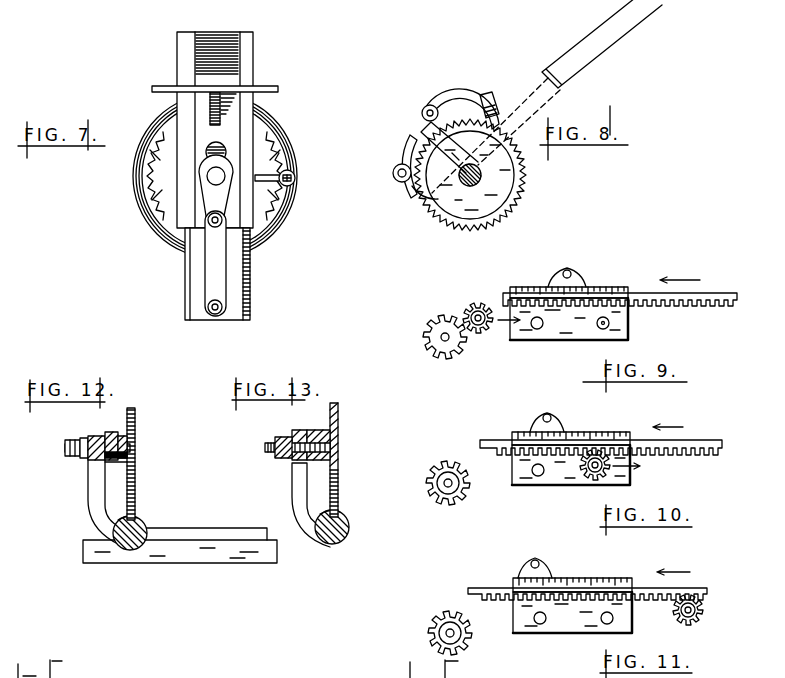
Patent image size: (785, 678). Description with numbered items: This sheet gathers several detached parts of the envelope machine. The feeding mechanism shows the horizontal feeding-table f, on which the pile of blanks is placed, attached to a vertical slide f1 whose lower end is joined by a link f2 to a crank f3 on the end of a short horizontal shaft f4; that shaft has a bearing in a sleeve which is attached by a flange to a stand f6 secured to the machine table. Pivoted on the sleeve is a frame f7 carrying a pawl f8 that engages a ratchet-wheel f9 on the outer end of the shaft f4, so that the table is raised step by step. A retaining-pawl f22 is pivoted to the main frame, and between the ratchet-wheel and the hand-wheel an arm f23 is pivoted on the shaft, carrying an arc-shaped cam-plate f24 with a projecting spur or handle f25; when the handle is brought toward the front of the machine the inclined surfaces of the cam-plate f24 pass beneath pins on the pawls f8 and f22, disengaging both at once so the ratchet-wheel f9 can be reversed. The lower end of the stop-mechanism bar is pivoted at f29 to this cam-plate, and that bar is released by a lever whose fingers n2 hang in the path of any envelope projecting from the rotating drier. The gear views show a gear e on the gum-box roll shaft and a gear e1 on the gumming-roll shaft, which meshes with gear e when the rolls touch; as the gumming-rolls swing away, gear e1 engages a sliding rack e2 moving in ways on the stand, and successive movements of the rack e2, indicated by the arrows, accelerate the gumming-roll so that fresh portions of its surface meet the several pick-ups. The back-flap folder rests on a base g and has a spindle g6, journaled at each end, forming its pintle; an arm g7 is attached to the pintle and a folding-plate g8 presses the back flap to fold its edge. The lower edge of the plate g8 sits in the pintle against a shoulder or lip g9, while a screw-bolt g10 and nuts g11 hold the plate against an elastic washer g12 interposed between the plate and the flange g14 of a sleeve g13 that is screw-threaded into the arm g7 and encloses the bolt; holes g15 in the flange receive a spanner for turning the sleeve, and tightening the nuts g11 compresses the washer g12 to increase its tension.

In FIG. 7, the horizontal feeding-table f is at (278, 89).
In FIG. 7, the vertical slide f1 is at (217, 130).
In FIG. 7, the link f2 is at (215, 263).
In FIG. 7, the crank f3 is at (216, 190).
In FIG. 7, the short horizontal shaft f4 is at (216, 176).
In FIG. 8, the short horizontal shaft f4 is at (481, 172).
In FIG. 7, the stand f6 is at (249, 50).
In FIG. 7, the frame f7 is at (296, 176).
In FIG. 7, the pawl f8 is at (280, 153).
In FIG. 8, the pawl f8 is at (399, 160).
In FIG. 7, the ratchet-wheel f9 is at (280, 193).
In FIG. 8, the ratchet-wheel f9 is at (516, 173).
In FIG. 8, the retaining-pawl f22 is at (448, 108).
In FIG. 8, the arm f23 is at (449, 155).
In FIG. 8, the arc-shaped cam-plate f24 is at (421, 129).
In FIG. 8, the projecting spur or handle f25 is at (494, 101).
In FIG. 8, the pivot f29 is at (409, 188).
In FIG. 8, the fingers n2 is at (602, 49).
In FIG. 9, the gear e is at (424, 337).
In FIG. 10, the gear e is at (470, 483).
In FIG. 11, the gear e is at (472, 633).
In FIG. 9, the gear e1 is at (478, 303).
In FIG. 10, the gear e1 is at (590, 482).
In FIG. 11, the gear e1 is at (704, 612).
In FIG. 9, the sliding rack e2 is at (620, 289).
In FIG. 10, the sliding rack e2 is at (602, 437).
In FIG. 11, the sliding rack e2 is at (587, 582).
In FIG. 12, the base plate g is at (223, 533).
In FIG. 12, the spindle g6 is at (150, 533).
In FIG. 13, the spindle g6 is at (352, 525).
In FIG. 12, the arm g7 is at (93, 480).
In FIG. 13, the arm g7 is at (295, 492).
In FIG. 12, the plate g8 is at (136, 475).
In FIG. 13, the plate g8 is at (340, 487).
In FIG. 12, the shoulder or lip g9 is at (139, 518).
In FIG. 13, the shoulder or lip g9 is at (343, 517).
In FIG. 12, the screw-bolt g10 is at (64, 448).
In FIG. 13, the screw-bolt g10 is at (266, 446).
In FIG. 12, the nuts g11 is at (83, 440).
In FIG. 13, the nuts g11 is at (283, 437).
In FIG. 12, the elastic washer g12 is at (117, 432).
In FIG. 13, the elastic washer g12 is at (327, 432).
In FIG. 12, the sleeve g13 is at (87, 457).
In FIG. 13, the sleeve g13 is at (290, 457).
In FIG. 12, the flange g14 is at (130, 435).
In FIG. 13, the flange g14 is at (318, 465).
In FIG. 12, the holes g15 is at (104, 435).